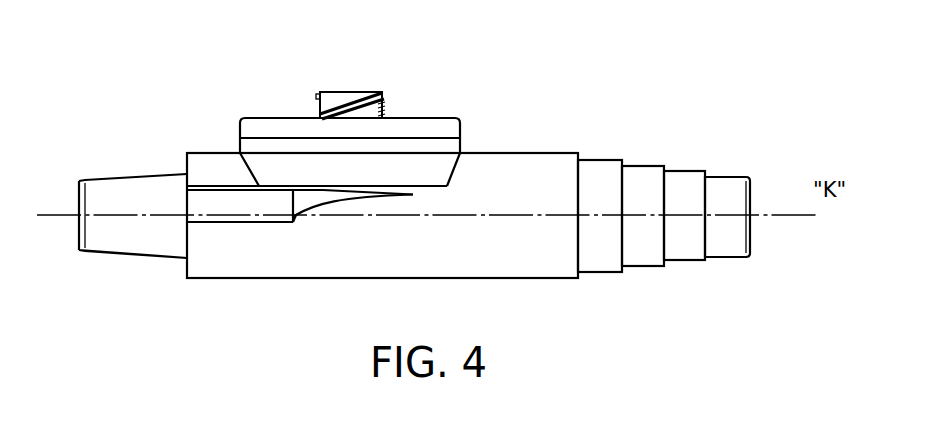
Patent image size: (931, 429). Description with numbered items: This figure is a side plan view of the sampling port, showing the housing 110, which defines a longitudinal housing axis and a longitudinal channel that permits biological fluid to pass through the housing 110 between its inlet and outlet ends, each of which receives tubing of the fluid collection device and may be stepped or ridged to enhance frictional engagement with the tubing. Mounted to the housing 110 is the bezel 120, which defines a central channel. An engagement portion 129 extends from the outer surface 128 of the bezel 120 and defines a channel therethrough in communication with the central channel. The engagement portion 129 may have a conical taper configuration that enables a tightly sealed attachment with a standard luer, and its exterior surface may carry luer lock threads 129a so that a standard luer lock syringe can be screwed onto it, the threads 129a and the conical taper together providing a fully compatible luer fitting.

The housing 110 is at (556, 163).
The bezel 120 is at (383, 102).
The outer surface 128 is at (448, 118).
The engagement portion 129 is at (333, 92).
The luer lock threads 129a is at (362, 100).